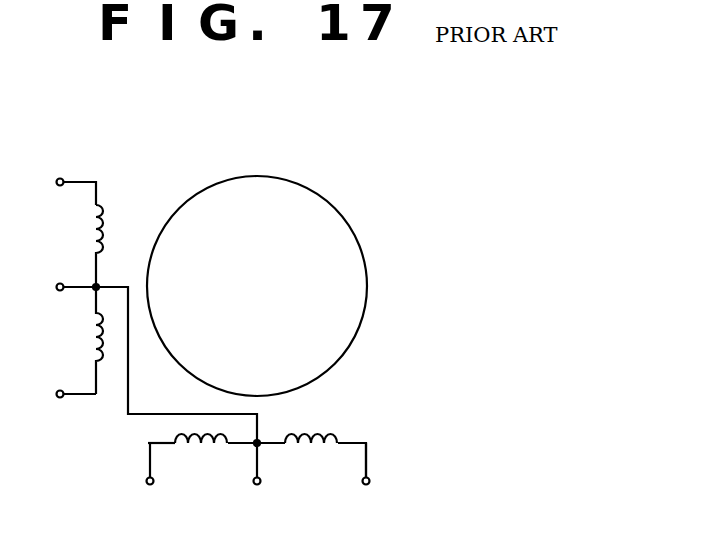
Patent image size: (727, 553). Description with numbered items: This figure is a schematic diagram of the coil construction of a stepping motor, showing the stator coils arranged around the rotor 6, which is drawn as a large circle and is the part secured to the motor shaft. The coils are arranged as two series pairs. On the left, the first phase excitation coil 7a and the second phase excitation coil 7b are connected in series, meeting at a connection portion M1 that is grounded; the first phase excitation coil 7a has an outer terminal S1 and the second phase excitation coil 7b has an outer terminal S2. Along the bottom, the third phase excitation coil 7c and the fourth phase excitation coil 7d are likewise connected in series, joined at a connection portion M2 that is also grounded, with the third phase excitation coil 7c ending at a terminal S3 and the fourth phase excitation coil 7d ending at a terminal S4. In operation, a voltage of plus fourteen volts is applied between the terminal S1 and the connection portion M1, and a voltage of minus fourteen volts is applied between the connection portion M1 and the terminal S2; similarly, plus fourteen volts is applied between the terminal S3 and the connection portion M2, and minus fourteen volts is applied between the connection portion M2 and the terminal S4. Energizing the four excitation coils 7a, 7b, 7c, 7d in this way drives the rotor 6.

The rotor 6 is at (370, 250).
The first phase excitation coil 7a is at (88, 224).
The second phase excitation coil 7b is at (90, 333).
The third phase excitation coil 7c is at (313, 455).
The fourth phase excitation coil 7d is at (207, 457).
The terminal of the first phase excitation coil S1 is at (56, 181).
The terminal of the second phase excitation coil S2 is at (54, 396).
The terminal of the third phase excitation coil S3 is at (370, 490).
The terminal of the fourth phase excitation coil S4 is at (145, 489).
The connection portion M1 is at (54, 287).
The connection portion M2 is at (253, 489).